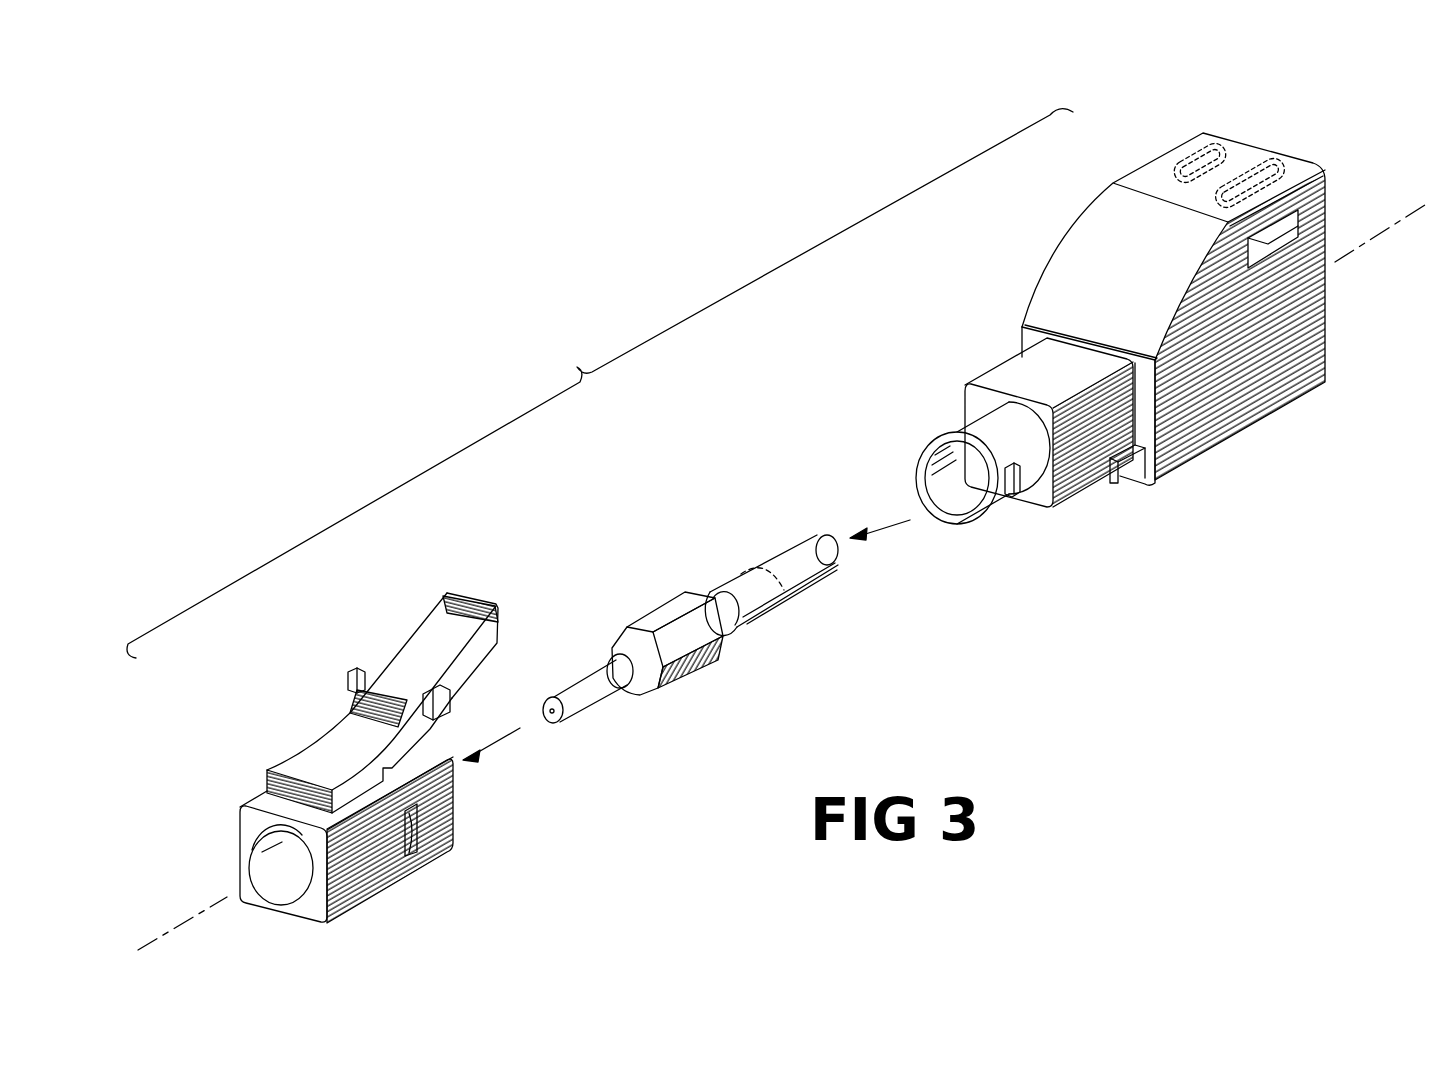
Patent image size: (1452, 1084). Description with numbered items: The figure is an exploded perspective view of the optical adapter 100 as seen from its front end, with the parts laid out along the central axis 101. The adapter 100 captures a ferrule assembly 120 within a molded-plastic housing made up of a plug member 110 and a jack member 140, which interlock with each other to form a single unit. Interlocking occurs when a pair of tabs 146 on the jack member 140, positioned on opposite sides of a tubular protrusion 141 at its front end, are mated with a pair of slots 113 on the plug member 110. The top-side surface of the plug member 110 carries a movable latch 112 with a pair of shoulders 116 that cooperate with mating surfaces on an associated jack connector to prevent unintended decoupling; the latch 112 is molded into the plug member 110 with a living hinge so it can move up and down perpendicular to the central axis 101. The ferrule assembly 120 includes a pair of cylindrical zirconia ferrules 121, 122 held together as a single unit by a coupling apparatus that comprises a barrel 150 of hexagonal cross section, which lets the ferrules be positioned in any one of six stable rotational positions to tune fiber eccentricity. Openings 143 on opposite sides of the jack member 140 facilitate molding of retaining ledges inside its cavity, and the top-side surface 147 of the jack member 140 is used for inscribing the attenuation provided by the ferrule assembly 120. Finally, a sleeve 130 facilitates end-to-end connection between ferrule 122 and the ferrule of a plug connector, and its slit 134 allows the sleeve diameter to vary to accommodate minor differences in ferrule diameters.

The optical adapter 100 is at (600, 383).
The central axis 101 is at (207, 906).
The plug member 110 is at (291, 749).
The movable latch 112 is at (440, 628).
The slots 113 is at (418, 838).
The shoulders 116 is at (432, 694).
The ferrule assembly 120 is at (652, 604).
The ferrule 121 is at (591, 679).
The ferrule 122 is at (752, 572).
The sleeve 130 is at (796, 547).
The slit 134 is at (828, 578).
The jack member 140 is at (1060, 249).
The tubular protrusion 141 is at (963, 425).
The openings 143 is at (1290, 228).
The tabs 146 is at (1016, 492).
The top-side surface 147 is at (1243, 158).
The barrel 150 is at (706, 664).